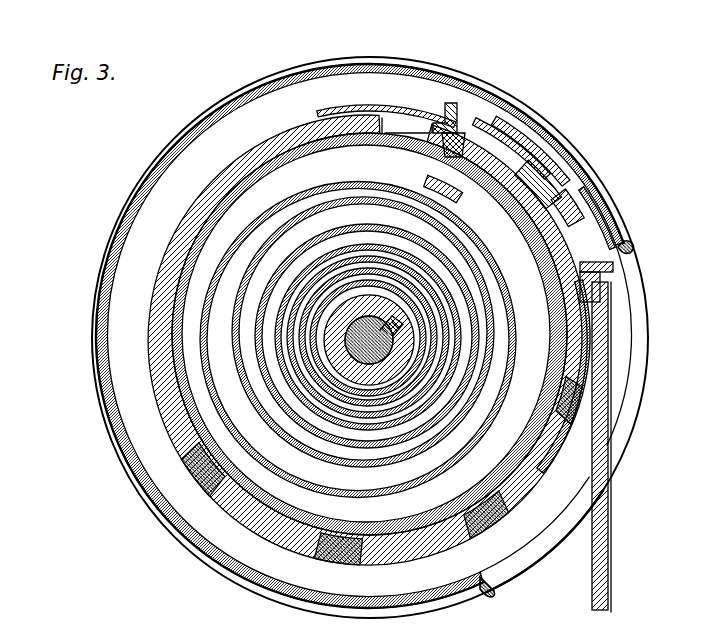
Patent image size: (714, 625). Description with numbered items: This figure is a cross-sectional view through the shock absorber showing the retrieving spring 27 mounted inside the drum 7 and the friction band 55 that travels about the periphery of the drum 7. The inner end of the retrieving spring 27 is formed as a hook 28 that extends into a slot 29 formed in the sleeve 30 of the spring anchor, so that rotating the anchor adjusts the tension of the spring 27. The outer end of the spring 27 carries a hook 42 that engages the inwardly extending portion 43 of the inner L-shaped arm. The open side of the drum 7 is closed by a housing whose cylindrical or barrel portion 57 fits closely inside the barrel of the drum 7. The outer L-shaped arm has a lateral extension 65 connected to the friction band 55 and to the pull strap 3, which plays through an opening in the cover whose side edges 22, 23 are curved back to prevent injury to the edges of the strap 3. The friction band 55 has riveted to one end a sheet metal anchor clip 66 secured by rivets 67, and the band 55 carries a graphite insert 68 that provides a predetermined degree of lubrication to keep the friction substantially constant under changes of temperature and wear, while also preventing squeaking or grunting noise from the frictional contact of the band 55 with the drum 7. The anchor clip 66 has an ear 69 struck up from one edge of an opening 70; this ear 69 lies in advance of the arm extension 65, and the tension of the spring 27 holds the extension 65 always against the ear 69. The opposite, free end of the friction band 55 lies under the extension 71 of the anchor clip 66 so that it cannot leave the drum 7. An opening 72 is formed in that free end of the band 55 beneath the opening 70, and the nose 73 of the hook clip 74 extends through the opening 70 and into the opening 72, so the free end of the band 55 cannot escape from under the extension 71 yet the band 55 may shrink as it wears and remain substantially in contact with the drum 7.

The strap 3 is at (612, 535).
The drum 7 is at (172, 425).
The side edge of cover opening 22 is at (632, 248).
The side edge of cover opening 23 is at (498, 600).
The retrieving spring 27 is at (203, 316).
The hook 28 is at (388, 332).
The slot 29 is at (400, 337).
The sleeve 30 is at (400, 340).
The hook 42 is at (540, 182).
The inwardly extending portion 43 is at (420, 185).
The friction band 55 is at (279, 128).
The cylindrical portion 57 is at (195, 402).
The lateral extension 65 is at (520, 150).
The anchor clip 66 is at (605, 240).
The rivets 67 is at (570, 205).
The graphite insert 68 is at (590, 425).
The ear 69 is at (458, 145).
The opening 70 is at (452, 110).
The extension 71 is at (404, 110).
The opening 72 is at (418, 125).
The nose 73 is at (440, 128).
The hook clip 74 is at (505, 135).